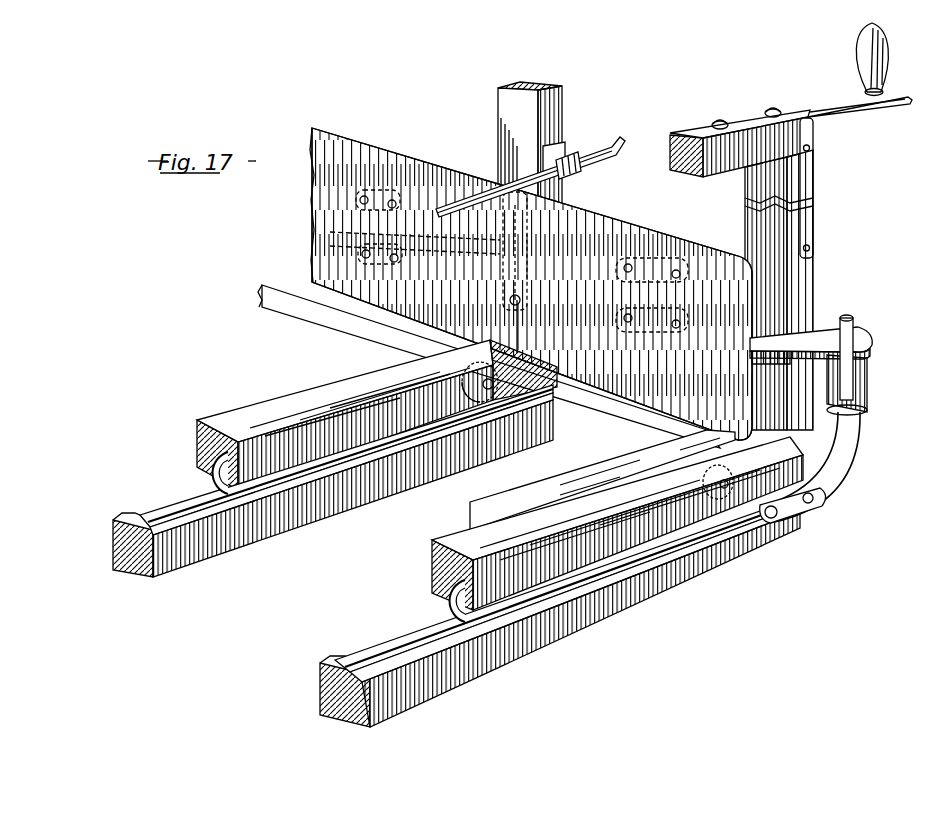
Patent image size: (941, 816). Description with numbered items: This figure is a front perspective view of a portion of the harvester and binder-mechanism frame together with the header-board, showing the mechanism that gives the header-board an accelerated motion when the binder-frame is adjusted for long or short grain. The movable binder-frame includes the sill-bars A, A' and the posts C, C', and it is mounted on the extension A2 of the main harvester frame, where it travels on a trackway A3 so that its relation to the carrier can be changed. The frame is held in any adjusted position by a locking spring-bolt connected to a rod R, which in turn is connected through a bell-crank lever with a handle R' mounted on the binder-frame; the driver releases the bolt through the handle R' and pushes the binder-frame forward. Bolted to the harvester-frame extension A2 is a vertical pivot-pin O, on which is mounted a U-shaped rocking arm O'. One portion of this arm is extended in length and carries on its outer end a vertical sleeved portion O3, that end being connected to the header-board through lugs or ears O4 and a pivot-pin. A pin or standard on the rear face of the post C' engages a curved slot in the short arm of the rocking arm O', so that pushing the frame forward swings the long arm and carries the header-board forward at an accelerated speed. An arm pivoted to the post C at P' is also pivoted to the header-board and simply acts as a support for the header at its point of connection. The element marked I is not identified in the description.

The sill-bar A is at (377, 415).
The sill-bar A' is at (617, 523).
The harvester-frame extension A2 is at (384, 514).
The trackway A3 is at (160, 482).
The post C is at (539, 142).
The post C' is at (789, 290).
The rod I is at (621, 142).
The vertical pivot-pin O is at (861, 352).
The U-shaped rocking arm O' is at (811, 410).
The vertical sleeved portion O3 is at (766, 340).
The lugs or ears O4 is at (516, 349).
The pivot of arm P P' is at (531, 284).
The rod R is at (791, 177).
The handle R' is at (884, 59).